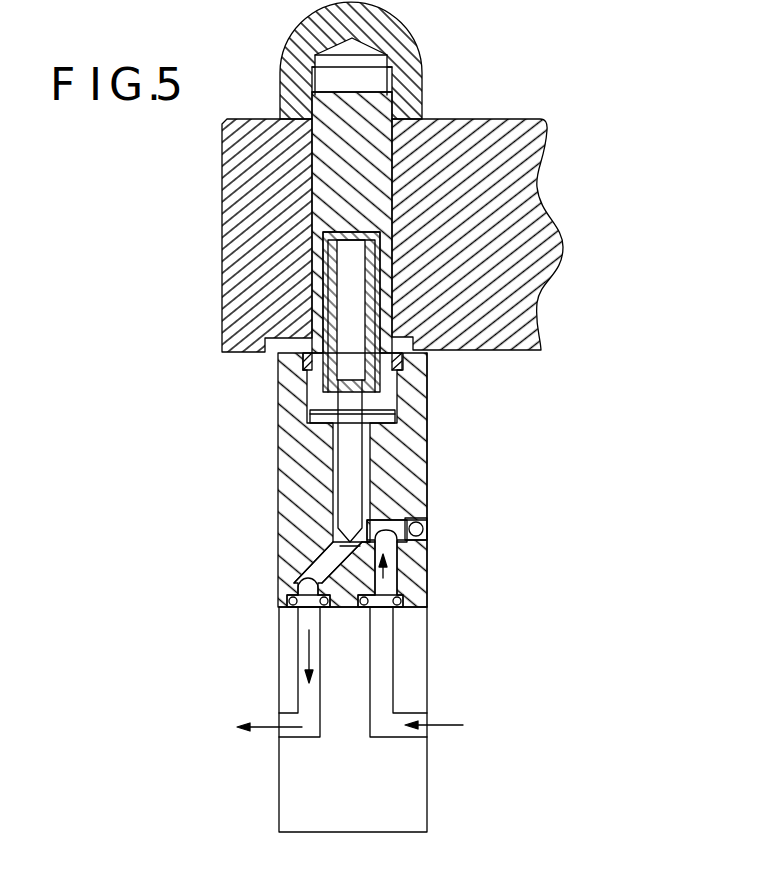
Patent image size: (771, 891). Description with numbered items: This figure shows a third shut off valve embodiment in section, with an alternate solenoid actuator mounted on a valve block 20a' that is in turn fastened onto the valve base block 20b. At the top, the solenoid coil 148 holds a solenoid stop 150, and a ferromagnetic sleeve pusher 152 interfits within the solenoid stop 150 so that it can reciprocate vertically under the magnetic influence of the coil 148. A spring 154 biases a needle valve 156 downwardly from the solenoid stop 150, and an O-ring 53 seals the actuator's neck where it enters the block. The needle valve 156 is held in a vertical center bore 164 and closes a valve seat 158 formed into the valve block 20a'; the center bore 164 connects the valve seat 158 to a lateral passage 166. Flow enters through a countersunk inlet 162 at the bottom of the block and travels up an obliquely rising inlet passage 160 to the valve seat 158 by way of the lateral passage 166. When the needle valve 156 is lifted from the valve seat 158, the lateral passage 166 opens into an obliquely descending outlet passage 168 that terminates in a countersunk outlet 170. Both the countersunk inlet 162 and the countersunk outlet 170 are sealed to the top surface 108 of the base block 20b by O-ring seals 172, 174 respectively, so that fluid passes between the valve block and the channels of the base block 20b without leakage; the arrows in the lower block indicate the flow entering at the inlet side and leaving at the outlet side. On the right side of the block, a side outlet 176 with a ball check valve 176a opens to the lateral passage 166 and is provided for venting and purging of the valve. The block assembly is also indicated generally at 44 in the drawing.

The solenoid coil 148 is at (510, 207).
The solenoid stop 150 is at (393, 282).
The ferromagnetic sleeve pusher 152 is at (332, 320).
The spring 154 is at (352, 285).
The O-ring 53 is at (305, 373).
The vertical center bore 164 is at (395, 428).
The valve base block 20a' is at (506, 480).
The valve block 44 is at (446, 472).
The needle valve 156 is at (345, 452).
The valve seat 158 is at (327, 547).
The obliquely descending outlet passage 168 is at (318, 555).
The countersunk outlet 170 is at (300, 582).
The O-ring seal 174 is at (290, 610).
The lateral passage 166 is at (390, 508).
The ball check valve 176a is at (425, 532).
The side outlet 176 is at (420, 535).
The obliquely rising inlet passage 160 is at (395, 562).
The O-ring seal 172 is at (395, 597).
The valve base block 20b is at (407, 812).
The top surface 108 is at (340, 607).
The countersunk inlet 162 is at (390, 617).